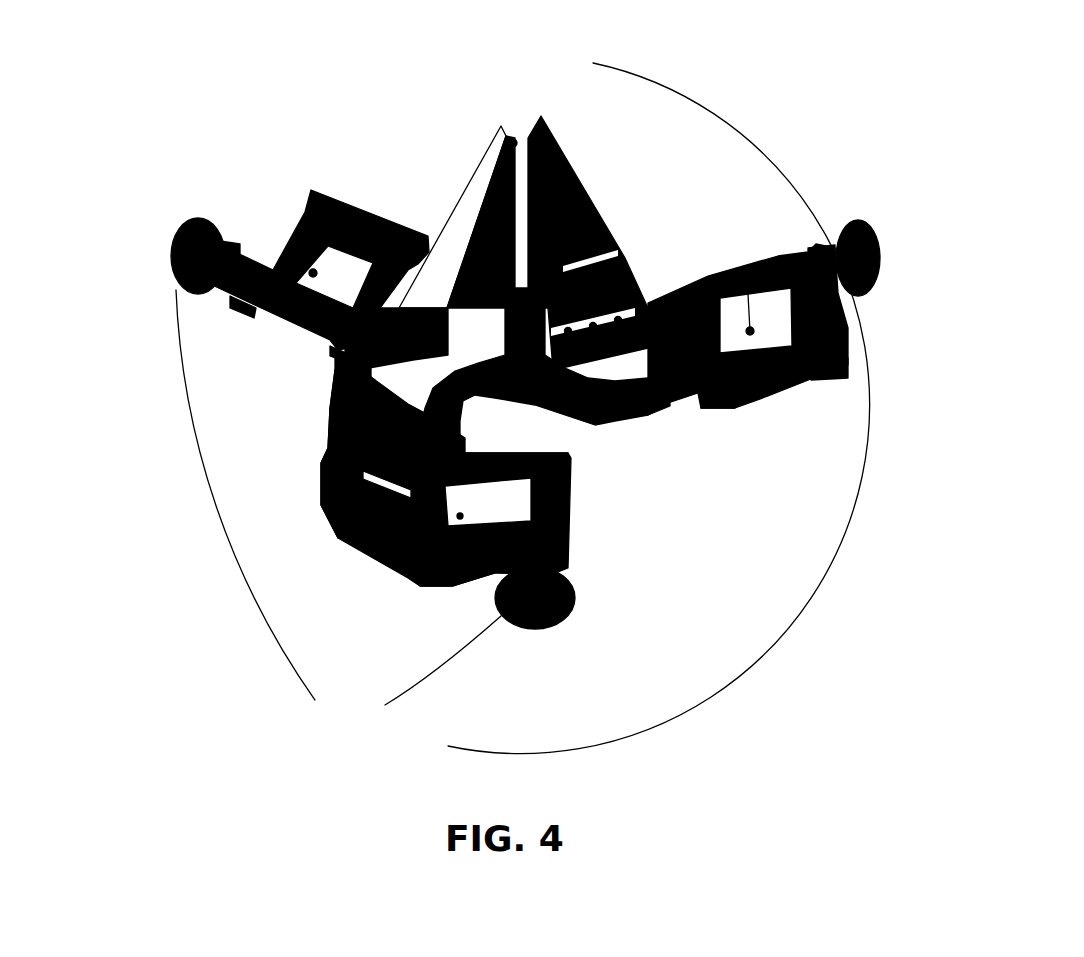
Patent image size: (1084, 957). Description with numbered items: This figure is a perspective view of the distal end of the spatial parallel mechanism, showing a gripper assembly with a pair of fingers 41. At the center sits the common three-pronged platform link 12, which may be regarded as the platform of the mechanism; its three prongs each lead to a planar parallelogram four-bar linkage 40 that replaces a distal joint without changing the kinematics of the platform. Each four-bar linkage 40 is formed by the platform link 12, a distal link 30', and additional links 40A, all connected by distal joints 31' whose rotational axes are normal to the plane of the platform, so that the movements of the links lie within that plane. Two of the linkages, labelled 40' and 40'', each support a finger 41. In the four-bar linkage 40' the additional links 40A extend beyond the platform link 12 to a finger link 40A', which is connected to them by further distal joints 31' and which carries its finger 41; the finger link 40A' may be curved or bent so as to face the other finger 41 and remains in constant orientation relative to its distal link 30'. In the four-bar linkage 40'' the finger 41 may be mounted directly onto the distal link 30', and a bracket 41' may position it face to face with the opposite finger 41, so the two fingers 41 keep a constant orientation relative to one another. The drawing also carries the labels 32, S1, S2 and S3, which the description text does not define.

The platform link 12 is at (673, 400).
The ring 32 is at (523, 411).
The planar parallelogram four-bar linkage 40 is at (446, 208).
The finger 41 is at (537, 243).
The bracket 41' is at (619, 258).
The four-bar linkage 40' is at (308, 453).
The four-bar linkage 40'' is at (818, 203).
The distal link 30' is at (526, 388).
The distal joint 31' is at (550, 415).
The additional link 40A is at (494, 526).
The finger link 40A' is at (316, 403).
The sphere S1 is at (535, 620).
The sphere S2 is at (867, 237).
The sphere S3 is at (181, 256).